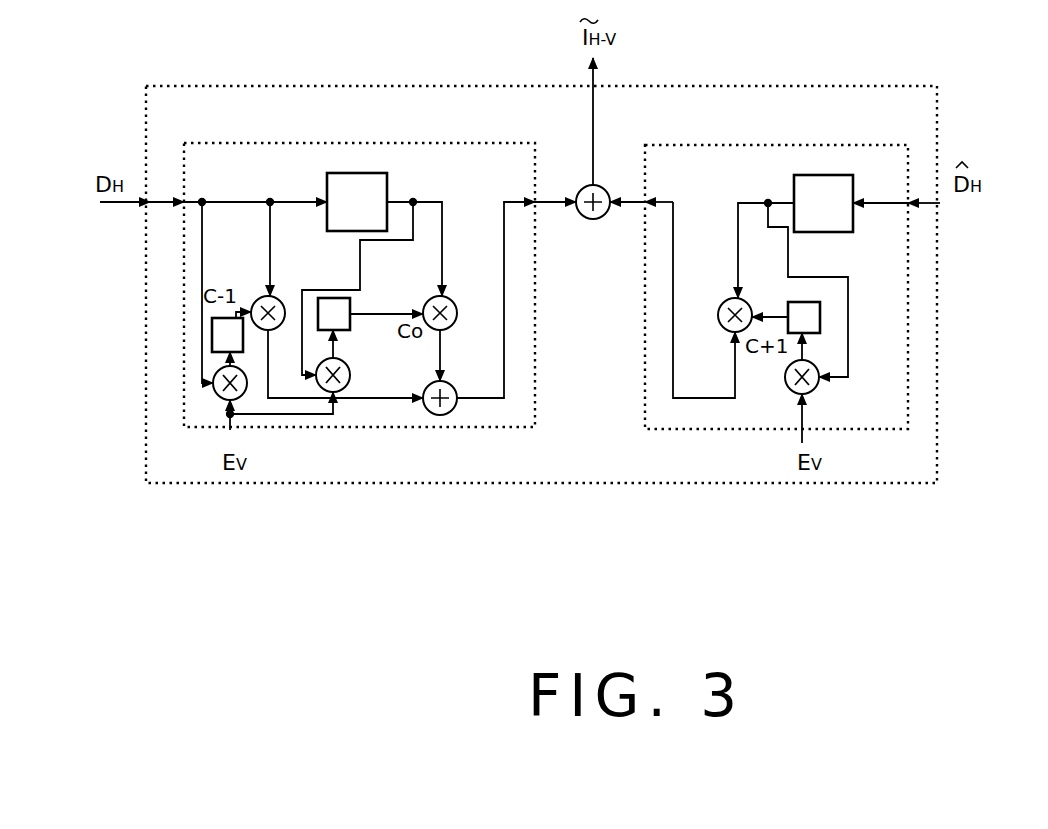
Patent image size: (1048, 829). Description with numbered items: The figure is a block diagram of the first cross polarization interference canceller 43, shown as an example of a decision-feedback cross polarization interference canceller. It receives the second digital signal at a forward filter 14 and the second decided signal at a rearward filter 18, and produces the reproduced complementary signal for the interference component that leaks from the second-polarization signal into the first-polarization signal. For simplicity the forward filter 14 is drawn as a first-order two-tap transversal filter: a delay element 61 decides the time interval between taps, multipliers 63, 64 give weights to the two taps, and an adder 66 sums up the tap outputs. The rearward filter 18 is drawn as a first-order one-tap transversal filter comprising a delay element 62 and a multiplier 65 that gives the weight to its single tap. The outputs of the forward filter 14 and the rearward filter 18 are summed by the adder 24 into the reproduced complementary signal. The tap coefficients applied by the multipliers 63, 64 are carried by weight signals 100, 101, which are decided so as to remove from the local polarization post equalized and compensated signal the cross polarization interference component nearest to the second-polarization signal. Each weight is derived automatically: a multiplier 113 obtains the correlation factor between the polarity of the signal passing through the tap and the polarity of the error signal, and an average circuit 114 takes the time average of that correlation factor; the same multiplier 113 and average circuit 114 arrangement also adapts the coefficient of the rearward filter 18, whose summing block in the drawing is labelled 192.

The forward filter 14 is at (272, 144).
The rearward filter 18 is at (730, 146).
The adder 24 is at (593, 220).
The first cross polarization interference canceller 43 is at (937, 435).
The delay element 61 is at (388, 183).
The delay element 62 is at (793, 191).
The multiplier 63 is at (282, 299).
The multiplier 64 is at (452, 299).
The multiplier 65 is at (743, 301).
The adder 66 is at (423, 389).
The weight signal 100 is at (233, 318).
The weight signal 101 is at (410, 312).
The multiplier 113 is at (218, 396).
The average circuit 114 is at (212, 330).
The summer 192 is at (787, 304).